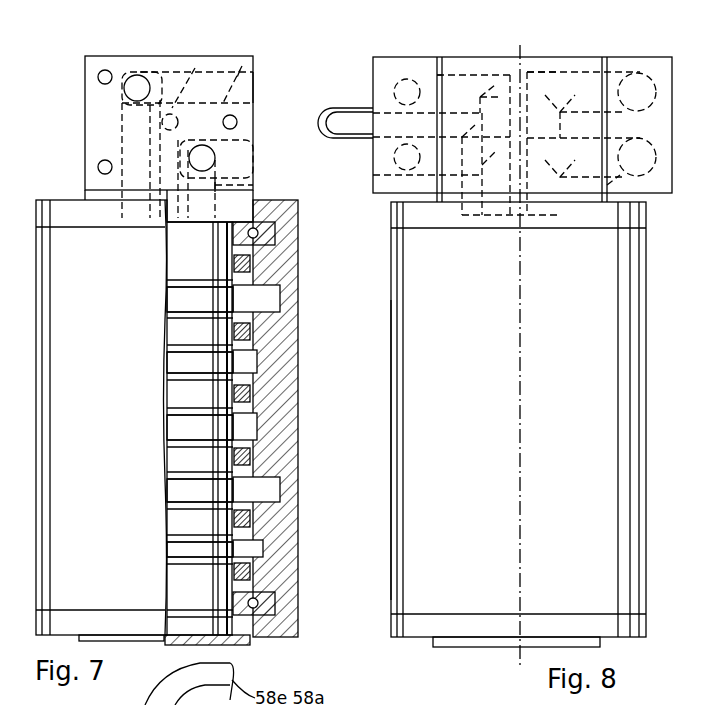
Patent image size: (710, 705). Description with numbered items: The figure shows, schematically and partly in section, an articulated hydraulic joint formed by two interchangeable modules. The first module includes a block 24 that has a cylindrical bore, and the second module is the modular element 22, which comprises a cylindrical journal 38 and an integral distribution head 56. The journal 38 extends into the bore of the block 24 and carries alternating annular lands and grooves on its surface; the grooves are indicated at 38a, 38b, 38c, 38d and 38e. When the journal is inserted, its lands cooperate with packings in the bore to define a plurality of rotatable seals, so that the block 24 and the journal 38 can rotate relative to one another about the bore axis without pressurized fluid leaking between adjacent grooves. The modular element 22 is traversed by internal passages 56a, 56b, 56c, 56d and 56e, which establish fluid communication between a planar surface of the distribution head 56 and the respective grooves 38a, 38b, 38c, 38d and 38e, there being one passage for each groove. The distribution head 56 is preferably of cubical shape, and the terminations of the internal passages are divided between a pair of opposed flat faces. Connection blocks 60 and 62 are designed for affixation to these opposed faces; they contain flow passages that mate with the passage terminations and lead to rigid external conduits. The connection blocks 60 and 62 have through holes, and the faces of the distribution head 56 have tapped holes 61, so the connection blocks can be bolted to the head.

In FIG. 7, the modular element 22 is at (60, 192).
In FIG. 8, the modular element 22 is at (600, 52).
In FIG. 7, the block 24 is at (285, 348).
In FIG. 8, the block 24 is at (415, 490).
In FIG. 7, the journal 38 is at (190, 248).
In FIG. 7, the groove 38a is at (182, 300).
In FIG. 7, the groove 38b is at (178, 363).
In FIG. 7, the groove 38c is at (178, 425).
In FIG. 7, the groove 38d is at (180, 492).
In FIG. 7, the groove 38e is at (178, 549).
In FIG. 7, the distribution head 56 is at (90, 134).
In FIG. 8, the distribution head 56 is at (474, 57).
In FIG. 7, the internal passage 56a is at (255, 185).
In FIG. 8, the internal passage 56a is at (620, 185).
In FIG. 7, the internal passage 56b is at (255, 158).
In FIG. 8, the internal passage 56b is at (412, 185).
In FIG. 7, the internal passage 56c is at (257, 90).
In FIG. 8, the internal passage 56c is at (452, 75).
In FIG. 7, the internal passage 56d is at (241, 68).
In FIG. 8, the internal passage 56d is at (592, 70).
In FIG. 7, the internal passage 56e is at (193, 68).
In FIG. 8, the internal passage 56e is at (385, 140).
In FIG. 8, the connection block 60 is at (375, 100).
In FIG. 7, the tapped holes 61 is at (98, 77).
In FIG. 8, the connection block 62 is at (662, 95).